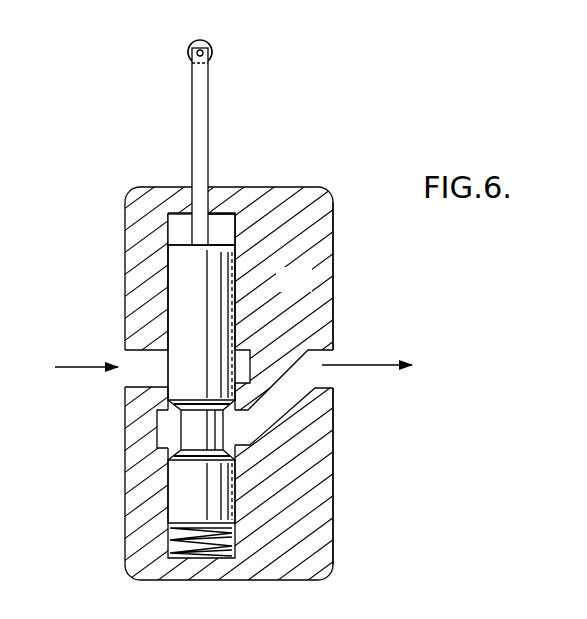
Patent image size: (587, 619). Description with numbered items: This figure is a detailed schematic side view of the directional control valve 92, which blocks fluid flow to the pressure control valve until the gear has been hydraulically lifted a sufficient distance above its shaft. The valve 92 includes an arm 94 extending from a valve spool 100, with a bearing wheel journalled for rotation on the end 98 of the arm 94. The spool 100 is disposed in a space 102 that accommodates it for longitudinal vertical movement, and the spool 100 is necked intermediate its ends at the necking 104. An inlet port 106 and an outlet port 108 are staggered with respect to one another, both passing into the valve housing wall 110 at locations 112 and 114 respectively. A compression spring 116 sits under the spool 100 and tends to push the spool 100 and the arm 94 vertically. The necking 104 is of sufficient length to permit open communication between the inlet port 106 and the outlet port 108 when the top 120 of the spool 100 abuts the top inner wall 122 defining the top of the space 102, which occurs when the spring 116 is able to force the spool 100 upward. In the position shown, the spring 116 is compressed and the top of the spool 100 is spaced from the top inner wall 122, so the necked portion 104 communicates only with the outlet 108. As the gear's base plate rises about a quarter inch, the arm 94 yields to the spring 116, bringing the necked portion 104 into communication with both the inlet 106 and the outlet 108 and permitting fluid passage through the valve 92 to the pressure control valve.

The directional control valve 92 is at (124, 486).
The arm 94 is at (208, 118).
The end 98 is at (207, 56).
The valve spool 100 is at (183, 275).
The space 102 is at (225, 225).
The necking 104 is at (210, 428).
The inlet port 106 is at (150, 365).
The outlet port 108 is at (308, 365).
The valve housing wall 110 is at (308, 290).
The inlet port passage location 112 is at (246, 366).
The outlet port passage location 114 is at (157, 432).
The compression spring 116 is at (170, 550).
The top of spool 120 is at (185, 240).
The top inner wall 122 is at (178, 200).